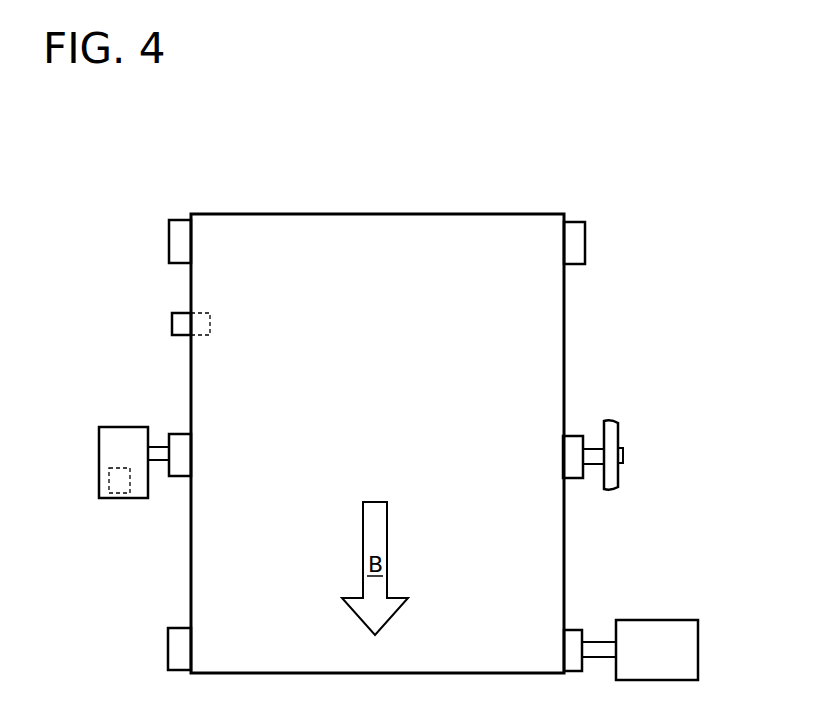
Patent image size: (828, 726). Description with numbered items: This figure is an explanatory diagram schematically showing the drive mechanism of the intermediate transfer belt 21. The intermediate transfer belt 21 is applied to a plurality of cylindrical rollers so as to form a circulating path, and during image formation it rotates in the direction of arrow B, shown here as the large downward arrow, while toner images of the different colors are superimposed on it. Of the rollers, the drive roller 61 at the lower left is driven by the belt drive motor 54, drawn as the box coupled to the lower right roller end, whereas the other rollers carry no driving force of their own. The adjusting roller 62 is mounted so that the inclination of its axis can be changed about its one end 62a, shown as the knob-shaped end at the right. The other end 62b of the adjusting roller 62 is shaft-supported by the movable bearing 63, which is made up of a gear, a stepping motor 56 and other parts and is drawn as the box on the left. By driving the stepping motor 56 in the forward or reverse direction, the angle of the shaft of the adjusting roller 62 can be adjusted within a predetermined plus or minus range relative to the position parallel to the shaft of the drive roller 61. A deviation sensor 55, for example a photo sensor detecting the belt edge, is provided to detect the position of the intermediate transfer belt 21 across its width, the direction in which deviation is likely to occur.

The intermediate transfer belt 21 is at (355, 214).
The belt drive motor 54 is at (655, 620).
The deviation sensor 55 is at (172, 324).
The stepping motor 56 is at (109, 479).
The drive roller 61 is at (177, 672).
The adjusting roller 62 is at (575, 436).
The one end of the adjusting roller 62a is at (624, 456).
The other end of the adjusting roller 62b is at (157, 446).
The movable bearing 63 is at (105, 427).